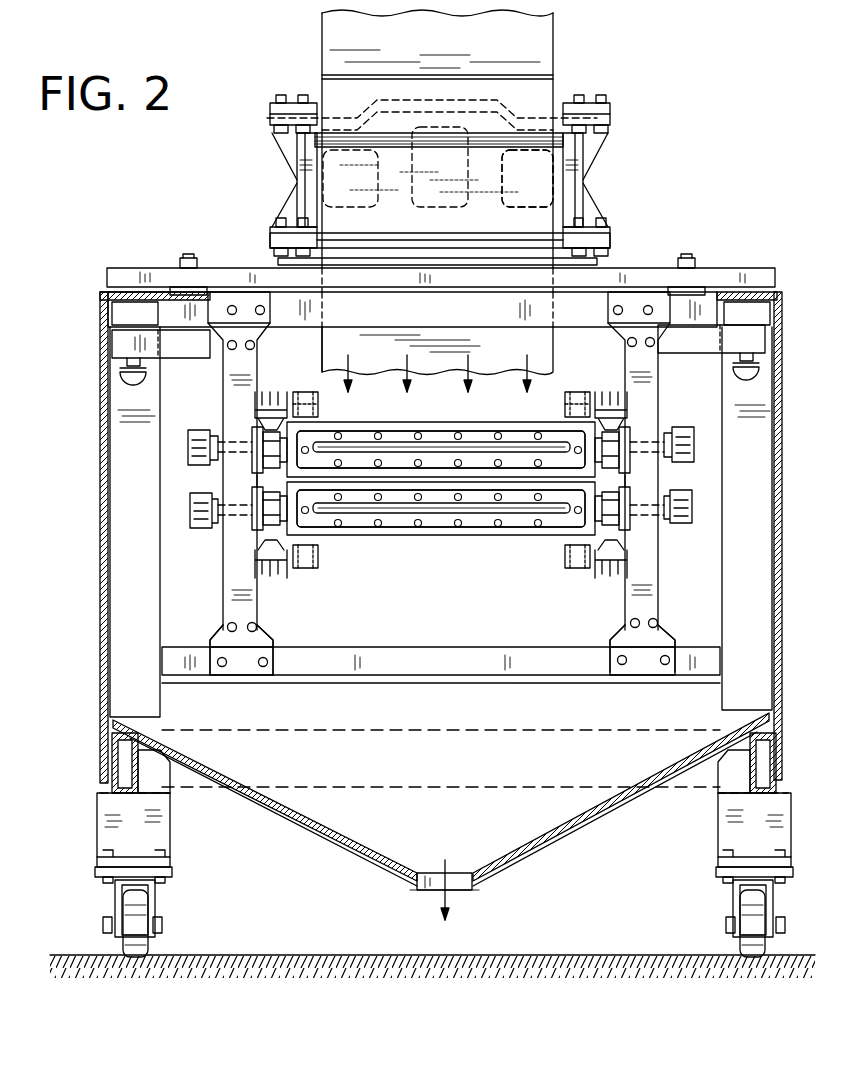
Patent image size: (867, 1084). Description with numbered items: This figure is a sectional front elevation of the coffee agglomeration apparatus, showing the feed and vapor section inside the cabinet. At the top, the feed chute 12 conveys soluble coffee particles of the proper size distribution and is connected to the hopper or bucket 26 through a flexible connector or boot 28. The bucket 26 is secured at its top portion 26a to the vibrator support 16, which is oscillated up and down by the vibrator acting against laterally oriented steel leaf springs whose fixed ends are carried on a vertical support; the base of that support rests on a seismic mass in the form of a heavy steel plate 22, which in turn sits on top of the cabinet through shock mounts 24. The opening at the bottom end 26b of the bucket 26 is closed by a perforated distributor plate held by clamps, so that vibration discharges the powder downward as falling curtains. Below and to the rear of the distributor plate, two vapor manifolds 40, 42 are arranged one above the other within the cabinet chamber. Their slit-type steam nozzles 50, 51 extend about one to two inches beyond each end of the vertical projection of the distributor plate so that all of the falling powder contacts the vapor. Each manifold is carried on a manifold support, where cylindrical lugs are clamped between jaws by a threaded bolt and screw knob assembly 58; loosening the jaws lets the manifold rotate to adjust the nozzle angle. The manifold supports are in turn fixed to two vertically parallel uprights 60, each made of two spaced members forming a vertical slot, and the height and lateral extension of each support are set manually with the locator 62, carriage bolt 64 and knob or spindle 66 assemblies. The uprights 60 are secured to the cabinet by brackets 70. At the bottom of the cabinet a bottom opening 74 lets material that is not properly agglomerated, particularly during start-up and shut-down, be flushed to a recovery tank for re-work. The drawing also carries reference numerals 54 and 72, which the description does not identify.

The feed chute 12 is at (520, 62).
The vibrator support 16 is at (297, 175).
The heavy steel plate 22 is at (625, 273).
The shock mounts 24 is at (183, 289).
The bucket 26 is at (555, 332).
The top portion of the bucket 26a is at (518, 191).
The bottom end of the bucket 26b is at (345, 347).
The flexible connector or boot 28 is at (485, 135).
The vapor manifold 40 is at (452, 393).
The vapor manifold 42 is at (450, 533).
The steam nozzle 50 is at (473, 445).
The steam nozzle 51 is at (483, 512).
The adjusting screws 54 is at (318, 402).
The threaded bolt and screw knob assembly 58 is at (270, 405).
The uprights 60 is at (238, 572).
The locator 62 is at (250, 525).
The carriage bolt 64 is at (238, 453).
The knob or spindle 66 is at (213, 430).
The brackets 70 is at (267, 633).
The casters 72 is at (138, 915).
The bottom opening 74 is at (468, 897).